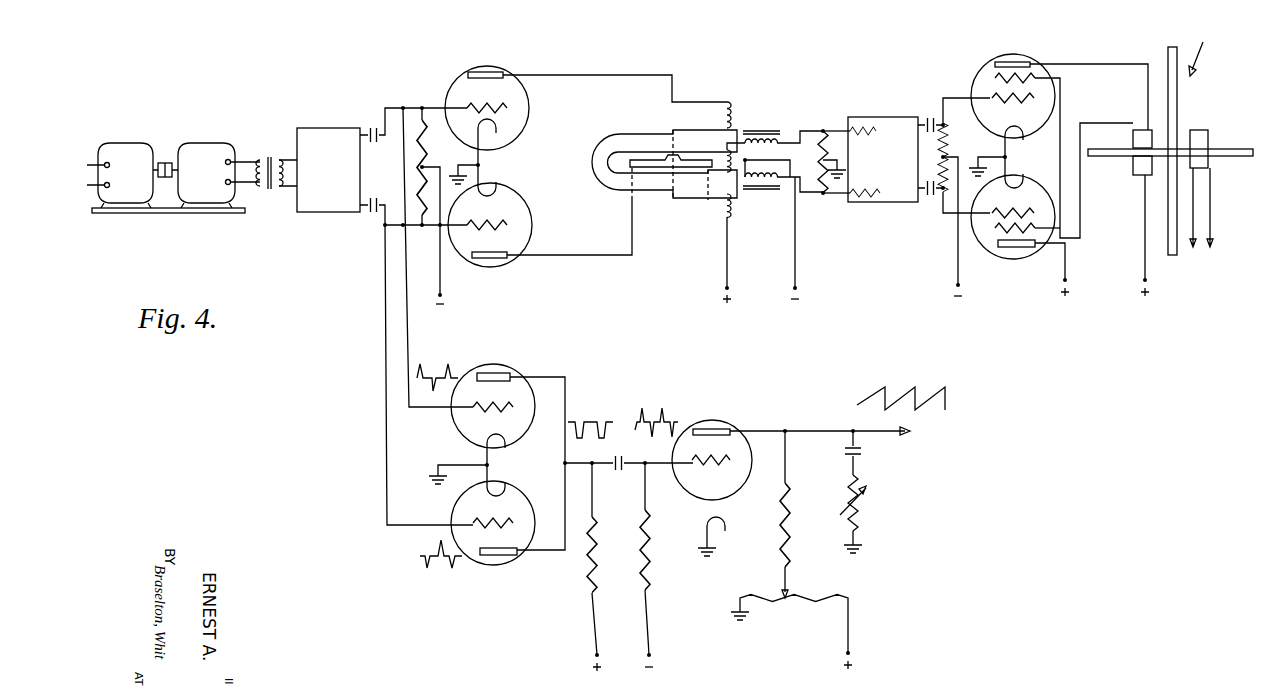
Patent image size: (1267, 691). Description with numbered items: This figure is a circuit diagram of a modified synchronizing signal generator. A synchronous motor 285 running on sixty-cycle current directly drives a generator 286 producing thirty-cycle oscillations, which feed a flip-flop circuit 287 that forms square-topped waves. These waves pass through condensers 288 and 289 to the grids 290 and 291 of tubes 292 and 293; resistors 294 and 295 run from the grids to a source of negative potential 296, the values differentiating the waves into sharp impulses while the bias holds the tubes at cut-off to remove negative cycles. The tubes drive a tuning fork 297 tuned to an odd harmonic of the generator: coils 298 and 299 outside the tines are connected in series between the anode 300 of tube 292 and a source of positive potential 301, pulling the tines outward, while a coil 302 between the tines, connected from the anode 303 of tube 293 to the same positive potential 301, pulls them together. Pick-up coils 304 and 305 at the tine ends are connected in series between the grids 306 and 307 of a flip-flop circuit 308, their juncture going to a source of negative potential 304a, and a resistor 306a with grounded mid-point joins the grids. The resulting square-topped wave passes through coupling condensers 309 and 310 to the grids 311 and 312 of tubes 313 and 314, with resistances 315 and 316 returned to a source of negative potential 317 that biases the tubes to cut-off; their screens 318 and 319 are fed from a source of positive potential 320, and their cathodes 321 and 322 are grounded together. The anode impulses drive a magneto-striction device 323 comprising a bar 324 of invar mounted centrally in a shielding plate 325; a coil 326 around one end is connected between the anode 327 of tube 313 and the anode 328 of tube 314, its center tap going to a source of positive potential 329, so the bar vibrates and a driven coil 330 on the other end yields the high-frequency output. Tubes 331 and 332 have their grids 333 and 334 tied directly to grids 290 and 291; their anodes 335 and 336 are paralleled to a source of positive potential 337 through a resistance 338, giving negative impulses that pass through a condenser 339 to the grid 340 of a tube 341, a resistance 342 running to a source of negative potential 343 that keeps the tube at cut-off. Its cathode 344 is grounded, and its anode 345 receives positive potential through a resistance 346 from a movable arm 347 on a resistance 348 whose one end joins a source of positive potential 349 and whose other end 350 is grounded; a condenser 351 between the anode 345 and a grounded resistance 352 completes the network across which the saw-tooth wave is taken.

The synchronous motor 285 is at (122, 152).
The generator 286 is at (208, 148).
The flip-flop circuit 287 is at (318, 130).
The condenser 288 is at (371, 127).
The condenser 289 is at (373, 211).
The grid 290 is at (470, 104).
The grid 291 is at (510, 225).
The tube 292 is at (480, 66).
The tube 293 is at (505, 265).
The resistor 294 is at (422, 118).
The resistor 295 is at (419, 188).
The source of negative potential 296 is at (438, 293).
The tuning fork 297 is at (598, 150).
The coil 298 is at (728, 100).
The coil 299 is at (725, 210).
The anode 300 is at (490, 74).
The source of positive potential 301 is at (725, 288).
The coil 302 is at (727, 142).
The anode 303 is at (490, 258).
The pick-up coil 304 is at (770, 138).
The source of negative potential 304a is at (793, 288).
The pick-up coil 305 is at (768, 190).
The grid 306 is at (862, 130).
The resistor 306a is at (824, 128).
The grid 307 is at (860, 203).
The flip-flop circuit 308 is at (900, 117).
The coupling condenser 309 is at (930, 117).
The coupling condenser 310 is at (930, 203).
The grid 311 is at (972, 86).
The grid 312 is at (996, 213).
The tube 313 is at (1000, 55).
The tube 314 is at (1042, 250).
The resistance 315 is at (946, 143).
The resistance 316 is at (950, 171).
The source of negative potential 317 is at (956, 285).
The screen 318 is at (1036, 78).
The screen 319 is at (985, 243).
The source of positive potential 320 is at (1067, 282).
The cathode 321 is at (1010, 140).
The cathode 322 is at (1016, 178).
The magneto-striction device 323 is at (1204, 50).
The bar 324 is at (1227, 149).
The shielding plate 325 is at (1167, 48).
The coil 326 is at (1133, 165).
The anode 327 is at (1015, 62).
The anode 328 is at (1016, 247).
The source of positive potential 329 is at (1143, 282).
The driven coil 330 is at (1210, 166).
The tube 331 is at (505, 368).
The tube 332 is at (475, 560).
The grid 333 is at (480, 406).
The grid 334 is at (480, 522).
The anode 335 is at (487, 375).
The anode 336 is at (498, 555).
The source of positive potential 337 is at (595, 655).
The resistance 338 is at (591, 577).
The condenser 339 is at (620, 450).
The grid 340 is at (708, 463).
The tube 341 is at (718, 421).
The resistance 342 is at (648, 585).
The source of negative potential 343 is at (651, 655).
The cathode 344 is at (721, 493).
The anode 345 is at (726, 430).
The resistance 346 is at (784, 549).
The movable arm 347 is at (784, 596).
The resistance 348 is at (803, 606).
The source of positive potential 349 is at (850, 653).
The end of resistance 350 is at (740, 603).
The condenser 351 is at (848, 452).
The resistance 352 is at (858, 511).